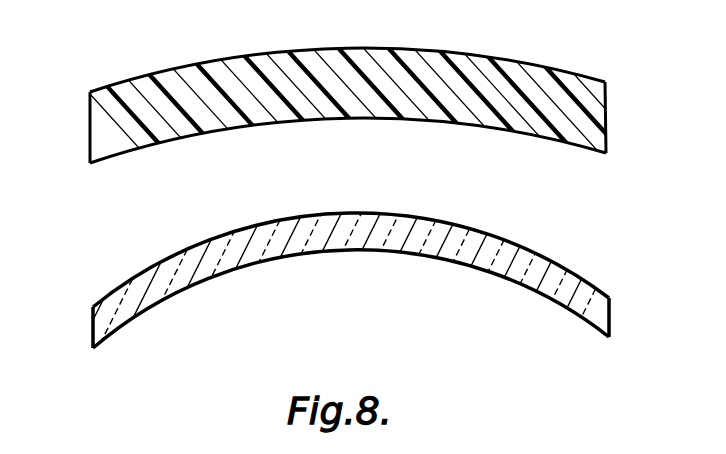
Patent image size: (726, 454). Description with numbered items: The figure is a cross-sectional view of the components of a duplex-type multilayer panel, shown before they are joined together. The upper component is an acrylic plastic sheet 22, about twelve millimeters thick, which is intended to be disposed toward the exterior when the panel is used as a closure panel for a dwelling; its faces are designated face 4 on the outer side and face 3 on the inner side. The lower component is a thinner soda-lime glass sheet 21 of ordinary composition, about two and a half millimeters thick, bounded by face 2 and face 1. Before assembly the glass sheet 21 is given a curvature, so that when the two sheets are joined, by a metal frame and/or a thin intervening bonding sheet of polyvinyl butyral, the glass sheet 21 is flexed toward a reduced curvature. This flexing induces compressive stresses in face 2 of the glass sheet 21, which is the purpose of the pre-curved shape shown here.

The face 1 is at (558, 303).
The face 2 is at (563, 270).
The face 3 is at (568, 143).
The face 4 is at (560, 72).
The soda-lime glass sheet 21 is at (120, 315).
The acrylic plastic sheet 22 is at (133, 118).